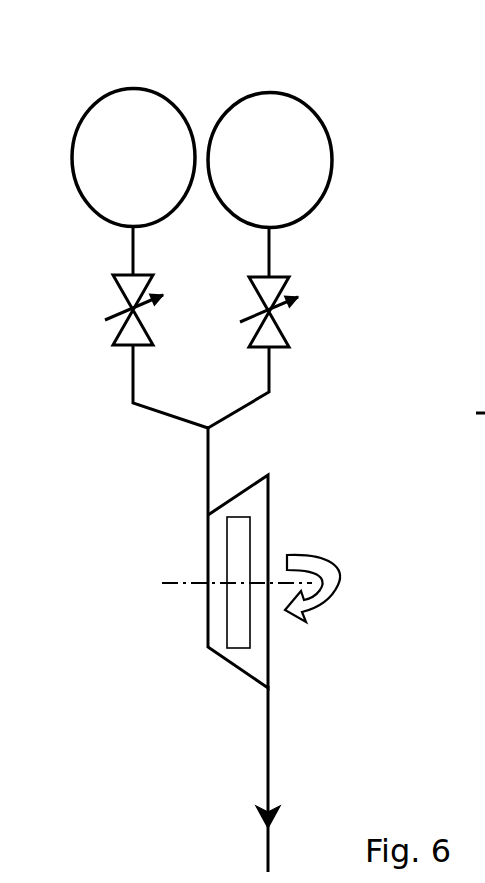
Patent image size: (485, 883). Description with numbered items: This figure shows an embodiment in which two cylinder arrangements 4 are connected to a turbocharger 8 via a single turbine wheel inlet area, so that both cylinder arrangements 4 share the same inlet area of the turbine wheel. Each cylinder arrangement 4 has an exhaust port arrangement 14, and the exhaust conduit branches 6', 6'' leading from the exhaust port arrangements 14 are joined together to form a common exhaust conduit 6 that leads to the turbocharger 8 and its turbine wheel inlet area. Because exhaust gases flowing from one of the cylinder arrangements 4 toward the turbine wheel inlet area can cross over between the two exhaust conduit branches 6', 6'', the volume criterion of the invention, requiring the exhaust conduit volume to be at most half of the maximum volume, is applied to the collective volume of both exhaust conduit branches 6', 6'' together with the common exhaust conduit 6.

The cylinder arrangement 4 is at (245, 75).
The exhaust port arrangement 14 is at (247, 333).
The exhaust conduit branch 6' is at (140, 399).
The exhaust conduit branch 6'' is at (290, 376).
The common exhaust conduit 6 is at (195, 649).
The turbocharger 8 is at (258, 512).